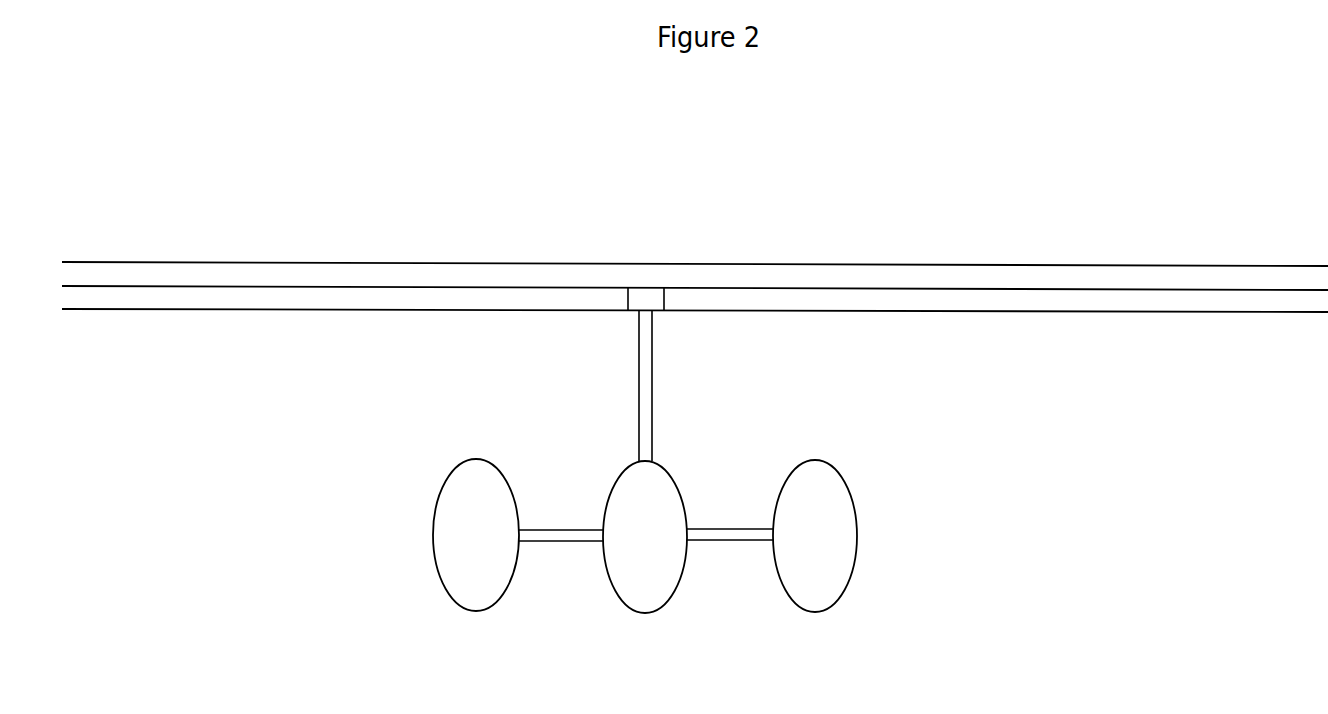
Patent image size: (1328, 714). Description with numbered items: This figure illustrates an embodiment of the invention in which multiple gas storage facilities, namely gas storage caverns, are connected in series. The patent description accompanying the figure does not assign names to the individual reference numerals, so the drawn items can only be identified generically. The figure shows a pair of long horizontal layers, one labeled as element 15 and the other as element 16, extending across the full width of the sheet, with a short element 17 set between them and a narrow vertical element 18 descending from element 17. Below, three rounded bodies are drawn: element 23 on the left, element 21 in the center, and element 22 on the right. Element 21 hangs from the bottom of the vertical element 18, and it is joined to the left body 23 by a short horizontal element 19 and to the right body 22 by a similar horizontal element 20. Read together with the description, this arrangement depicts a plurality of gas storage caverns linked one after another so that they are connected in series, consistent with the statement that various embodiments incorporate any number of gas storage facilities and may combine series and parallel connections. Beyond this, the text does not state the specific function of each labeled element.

The upper wall layer 15 is at (845, 265).
The lower wall layer 16 is at (1025, 300).
The opening in lower wall 17 is at (652, 298).
The connecting conduit 18 is at (638, 368).
The left connecting channel 19 is at (566, 530).
The right connecting channel 20 is at (723, 540).
The central chamber 21 is at (639, 575).
The right chamber 22 is at (843, 530).
The left chamber 23 is at (458, 552).